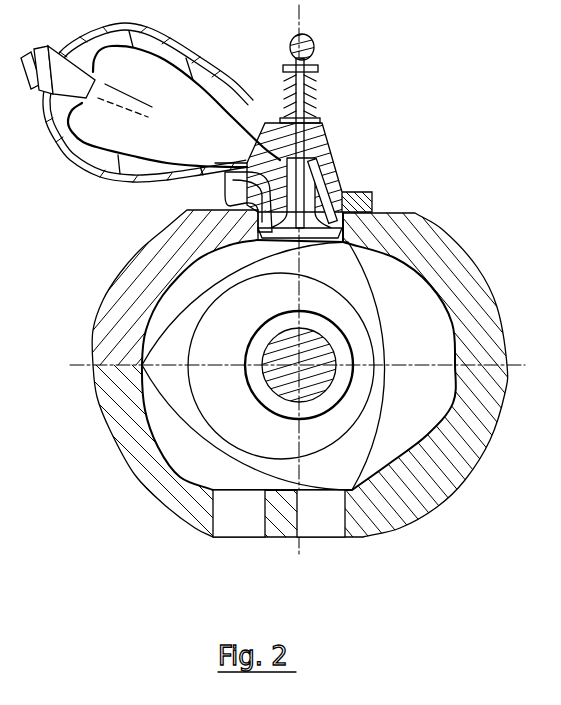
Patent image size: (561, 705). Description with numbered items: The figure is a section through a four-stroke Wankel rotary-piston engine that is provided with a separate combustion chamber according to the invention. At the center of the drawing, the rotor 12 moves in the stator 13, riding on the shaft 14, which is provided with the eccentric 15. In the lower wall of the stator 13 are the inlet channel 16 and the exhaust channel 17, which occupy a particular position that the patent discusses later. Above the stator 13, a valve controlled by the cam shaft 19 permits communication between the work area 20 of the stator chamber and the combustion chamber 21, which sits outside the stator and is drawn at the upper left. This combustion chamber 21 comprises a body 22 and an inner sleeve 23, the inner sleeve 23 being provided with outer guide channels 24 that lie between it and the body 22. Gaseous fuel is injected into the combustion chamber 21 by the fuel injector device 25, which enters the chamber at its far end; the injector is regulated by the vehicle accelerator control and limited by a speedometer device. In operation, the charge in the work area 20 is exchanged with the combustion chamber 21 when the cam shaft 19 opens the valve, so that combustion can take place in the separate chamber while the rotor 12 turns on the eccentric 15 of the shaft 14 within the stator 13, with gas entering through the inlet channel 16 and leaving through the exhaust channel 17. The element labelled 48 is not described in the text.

The rotor 12 is at (372, 415).
The stator 13 is at (158, 473).
The shaft 14 is at (286, 382).
The eccentric 15 is at (328, 432).
The inlet channel 16 is at (247, 525).
The exhaust channel 17 is at (330, 527).
The cam shaft 19 is at (316, 43).
The work area 20 is at (215, 281).
The combustion chamber 21 is at (183, 115).
The body 22 is at (127, 180).
The inner sleeve 23 is at (106, 147).
The outer guide channels 24 is at (190, 80).
The fuel injector device 25 is at (68, 73).
The valve head 48 is at (315, 234).